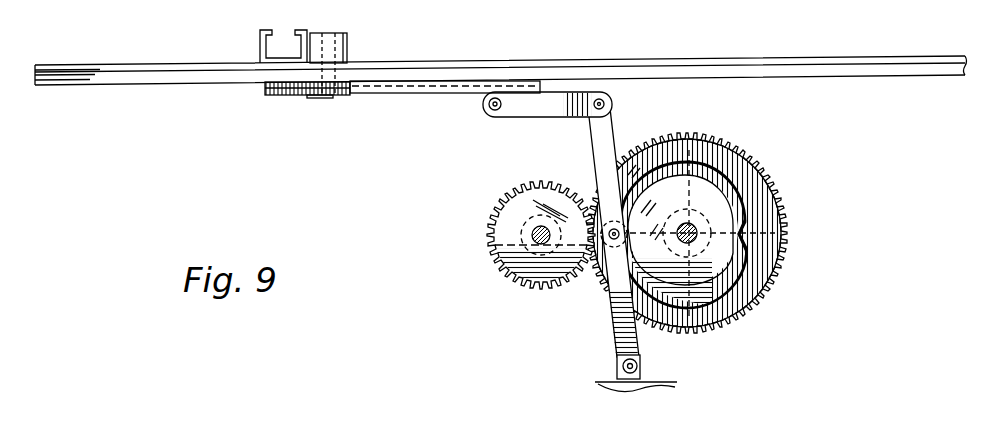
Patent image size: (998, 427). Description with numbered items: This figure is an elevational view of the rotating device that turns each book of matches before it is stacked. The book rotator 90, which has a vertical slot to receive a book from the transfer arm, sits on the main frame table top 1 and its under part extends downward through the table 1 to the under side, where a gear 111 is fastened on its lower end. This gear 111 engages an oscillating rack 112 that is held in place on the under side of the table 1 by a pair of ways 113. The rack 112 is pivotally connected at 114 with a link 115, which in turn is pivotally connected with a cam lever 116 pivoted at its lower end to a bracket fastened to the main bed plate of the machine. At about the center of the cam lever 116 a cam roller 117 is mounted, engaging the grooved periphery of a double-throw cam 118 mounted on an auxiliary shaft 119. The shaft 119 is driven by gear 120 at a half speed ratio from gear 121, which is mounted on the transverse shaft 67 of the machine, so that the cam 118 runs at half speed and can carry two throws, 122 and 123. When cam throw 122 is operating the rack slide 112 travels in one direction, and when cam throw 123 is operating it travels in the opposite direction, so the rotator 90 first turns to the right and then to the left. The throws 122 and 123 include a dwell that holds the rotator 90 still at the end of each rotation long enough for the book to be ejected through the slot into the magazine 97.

The main frame table top 1 is at (197, 85).
The magazine 97 is at (284, 23).
The book rotator 90 is at (346, 46).
The gear 111 is at (338, 97).
The oscillating rack 112 is at (412, 94).
The ways 113 is at (443, 87).
The pivotal connection 114 is at (493, 108).
The link 115 is at (556, 114).
The cam lever 116 is at (603, 120).
The cam roller 117 is at (645, 210).
The double-throw cam 118 is at (728, 168).
The auxiliary shaft 119 is at (694, 230).
The gear 120 is at (716, 125).
The gear 121 is at (490, 253).
The cam throw 122 is at (611, 230).
The cam throw 123 is at (775, 228).
The transverse shaft 67 is at (533, 243).